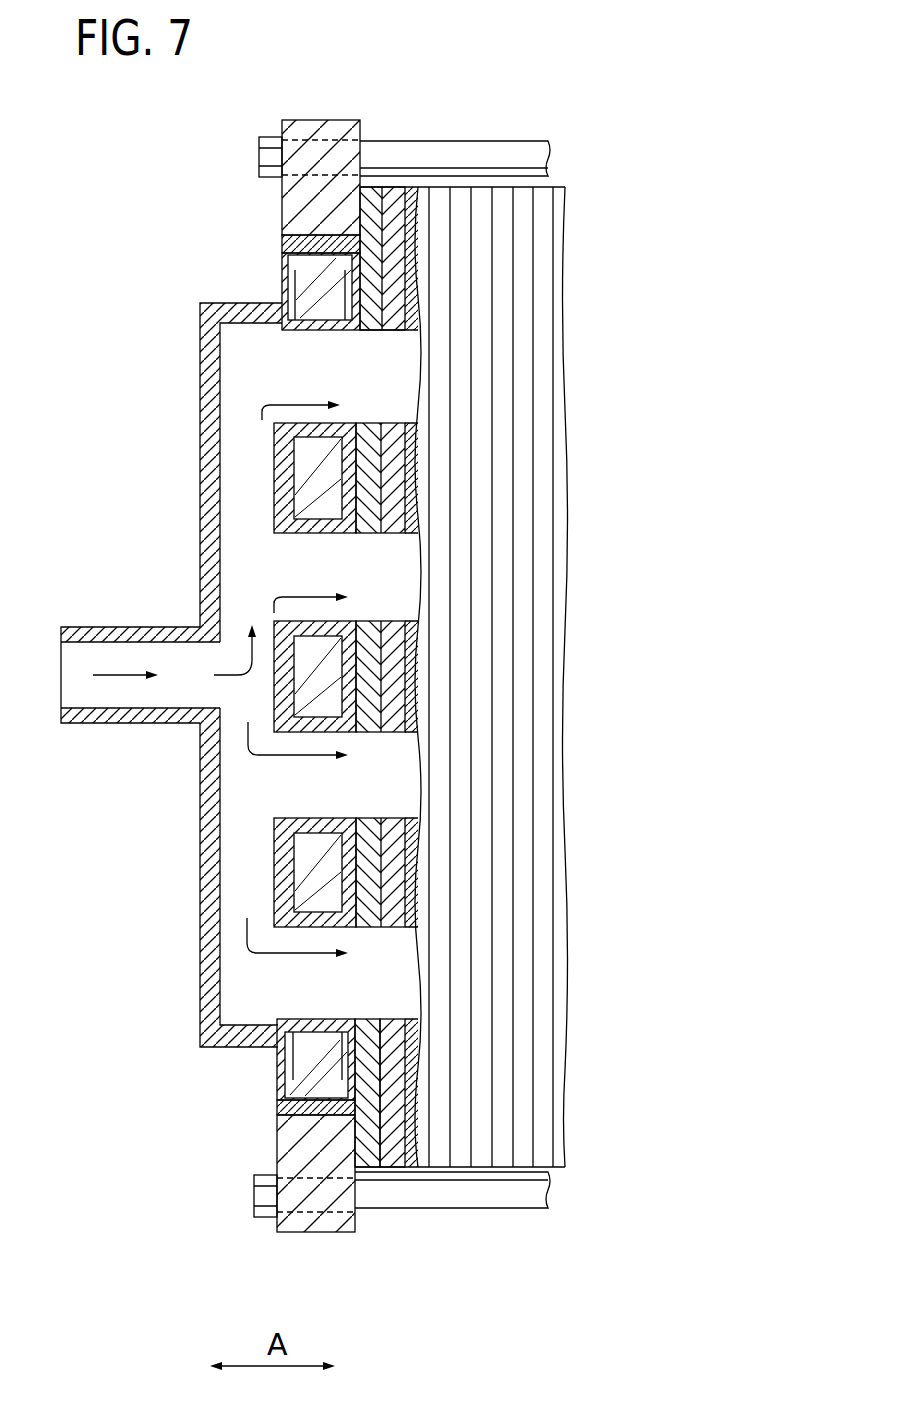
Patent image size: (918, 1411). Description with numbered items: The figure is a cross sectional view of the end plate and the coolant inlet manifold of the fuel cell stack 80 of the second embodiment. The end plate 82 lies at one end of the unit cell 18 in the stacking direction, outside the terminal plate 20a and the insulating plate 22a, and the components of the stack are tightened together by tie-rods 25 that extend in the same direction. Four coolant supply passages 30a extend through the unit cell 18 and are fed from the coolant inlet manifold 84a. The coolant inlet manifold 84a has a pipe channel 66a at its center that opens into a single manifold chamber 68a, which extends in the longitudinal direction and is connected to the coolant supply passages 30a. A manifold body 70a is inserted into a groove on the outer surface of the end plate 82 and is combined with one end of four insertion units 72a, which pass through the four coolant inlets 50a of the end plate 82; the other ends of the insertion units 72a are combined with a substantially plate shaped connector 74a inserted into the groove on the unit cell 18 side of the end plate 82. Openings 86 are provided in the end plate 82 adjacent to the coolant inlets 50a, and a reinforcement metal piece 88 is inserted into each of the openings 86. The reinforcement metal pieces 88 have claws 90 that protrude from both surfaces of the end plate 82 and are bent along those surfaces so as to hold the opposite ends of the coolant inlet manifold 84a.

The fuel cell stack 80 is at (144, 154).
The end plate 82 is at (286, 647).
The openings 86 is at (333, 235).
The reinforcement metal piece 88 is at (286, 676).
The claws 90 is at (282, 290).
The tie-rods 25 is at (433, 158).
The unit cell 18 is at (521, 625).
The manifold chamber 68a is at (258, 347).
The coolant inlet manifold 84a is at (195, 472).
The manifold body 70a is at (199, 862).
The pipe channel 66a is at (122, 627).
The coolant inlets 50a is at (320, 330).
The insertion units 72a is at (355, 423).
The connector 74a is at (412, 325).
The coolant supply passages 30a is at (375, 358).
The insulating plate 22a is at (370, 1130).
The terminal plate 20a is at (393, 1153).